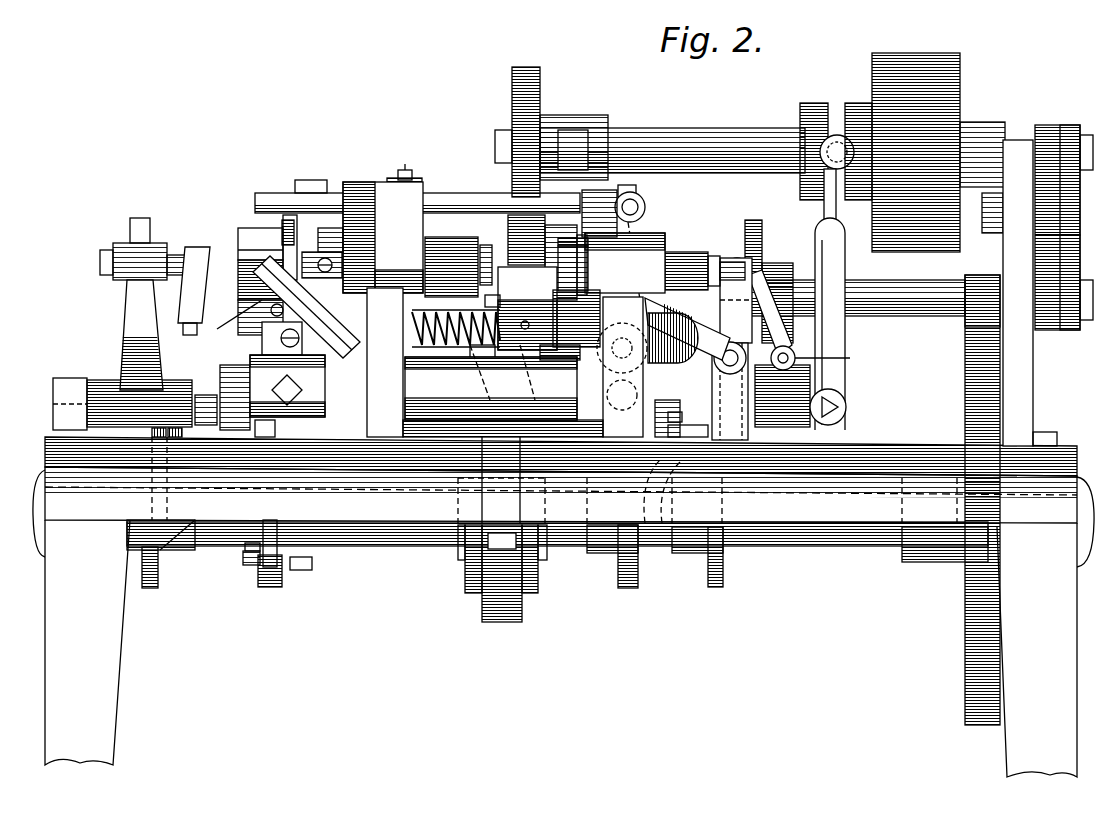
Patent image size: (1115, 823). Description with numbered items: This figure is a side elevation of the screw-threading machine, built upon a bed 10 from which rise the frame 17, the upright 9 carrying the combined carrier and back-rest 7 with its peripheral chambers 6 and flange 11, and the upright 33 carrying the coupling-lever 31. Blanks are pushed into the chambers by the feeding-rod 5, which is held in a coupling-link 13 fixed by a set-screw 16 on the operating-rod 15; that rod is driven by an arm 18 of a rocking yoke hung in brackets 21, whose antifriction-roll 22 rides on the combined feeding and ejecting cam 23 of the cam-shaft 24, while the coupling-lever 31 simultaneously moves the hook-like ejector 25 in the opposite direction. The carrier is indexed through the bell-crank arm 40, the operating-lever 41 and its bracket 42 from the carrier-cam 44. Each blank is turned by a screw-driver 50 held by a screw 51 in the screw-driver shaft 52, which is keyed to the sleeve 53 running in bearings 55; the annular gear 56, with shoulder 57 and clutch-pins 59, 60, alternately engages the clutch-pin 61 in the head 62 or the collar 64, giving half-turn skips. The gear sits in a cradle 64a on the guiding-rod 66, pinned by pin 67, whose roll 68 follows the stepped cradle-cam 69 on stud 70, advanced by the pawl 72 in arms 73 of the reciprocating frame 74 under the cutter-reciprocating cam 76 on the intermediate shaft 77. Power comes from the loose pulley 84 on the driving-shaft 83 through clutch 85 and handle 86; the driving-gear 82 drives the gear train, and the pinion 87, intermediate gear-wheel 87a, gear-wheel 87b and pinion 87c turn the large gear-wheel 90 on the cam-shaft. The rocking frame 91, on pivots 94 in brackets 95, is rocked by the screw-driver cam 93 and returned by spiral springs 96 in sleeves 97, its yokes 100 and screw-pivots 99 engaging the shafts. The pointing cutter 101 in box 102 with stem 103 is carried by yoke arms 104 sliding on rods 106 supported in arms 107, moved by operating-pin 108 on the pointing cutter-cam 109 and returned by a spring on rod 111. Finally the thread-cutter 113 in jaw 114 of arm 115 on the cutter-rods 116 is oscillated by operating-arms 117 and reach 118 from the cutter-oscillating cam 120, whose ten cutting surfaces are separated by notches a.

The feeding-rod 5 is at (330, 230).
The peripheral chambers 6 is at (250, 238).
The combined carrier and back-rest 7 is at (238, 250).
The upright 9 is at (311, 178).
The bed 10 is at (563, 607).
The flange 11 is at (284, 232).
The coupling-link 13 is at (421, 222).
The operating-rod 15 is at (445, 201).
The set-screw 16 is at (407, 164).
The frame 17 is at (599, 213).
The arms of rocking yoke 18 is at (640, 218).
The brackets 21 is at (683, 417).
The antifriction-roll 22 is at (698, 435).
The combined feeding and ejecting cam 23 is at (638, 572).
The cam-shaft 24 is at (398, 546).
The hook-like ejector 25 is at (231, 319).
The coupling-lever 31 is at (450, 338).
The upright 33 is at (505, 362).
The arm of bell-crank lever 40 is at (262, 565).
The operating-lever 41 is at (243, 558).
The bracket 42 is at (245, 547).
The carrier-cam 44 is at (270, 588).
The screw-driver 50 is at (312, 252).
The screw 51 is at (328, 259).
The screw-driver shaft 52 is at (668, 252).
The sleeve 53 is at (515, 244).
The bearings 55 is at (504, 237).
The annular gear 56 is at (548, 232).
The annular shoulder 57 is at (578, 240).
The clutch-pin 59 is at (488, 301).
The clutch-pin 60 is at (588, 242).
The clutch-pin 61 is at (485, 245).
The head 62 is at (450, 244).
The collar 64 is at (586, 262).
The cradle 64a is at (527, 308).
The guiding-rod 66 is at (484, 354).
The pin 67 is at (522, 340).
The antifriction-roll 68 is at (575, 330).
The stepped cradle-cam 69 is at (680, 343).
The stud 70 is at (622, 356).
The pawl 72 is at (687, 329).
The arms 73 is at (823, 358).
The double reciprocating frame 74 is at (783, 410).
The cutter-reciprocating cam 76 is at (745, 236).
The intermediate shaft 77 is at (878, 312).
The driving-gear 82 is at (512, 99).
The driving-shaft 83 is at (722, 140).
The loose pulley 84 is at (916, 152).
The clutch 85 is at (800, 188).
The operating-handle 86 is at (815, 238).
The pinion 87 is at (1058, 130).
The intermediate gear-wheel 87a is at (1080, 200).
The gear-wheel 87b is at (1080, 272).
The pinion 87c is at (966, 280).
The large gear-wheel 90 is at (965, 388).
The double rocking frame 91 is at (712, 430).
The screw-driver cam 93 is at (723, 560).
The pivots 94 is at (714, 358).
The brackets 95 is at (730, 391).
The spiral springs 96 is at (722, 262).
The sleeves 97 is at (692, 256).
The screw-pivots 99 is at (752, 265).
The yokes 100 is at (736, 300).
The cutter 101 is at (187, 337).
The box 102 is at (195, 285).
The stem 103 is at (177, 255).
The arms of yoke 104 is at (133, 304).
The rods 106 is at (203, 395).
The arms 107 is at (55, 400).
The operating-pin 108 is at (177, 433).
The pointing cutter-cam 109 is at (158, 568).
The rod 111 is at (194, 433).
The thread-cutter 113 is at (270, 308).
The jaw 114 is at (328, 318).
The arm 115 is at (280, 336).
The cutter-rods 116 is at (230, 372).
The operating-arm 117 is at (457, 497).
The reach 118 is at (465, 573).
The cutter-oscillating cam 120 is at (522, 603).
The notches a is at (502, 541).